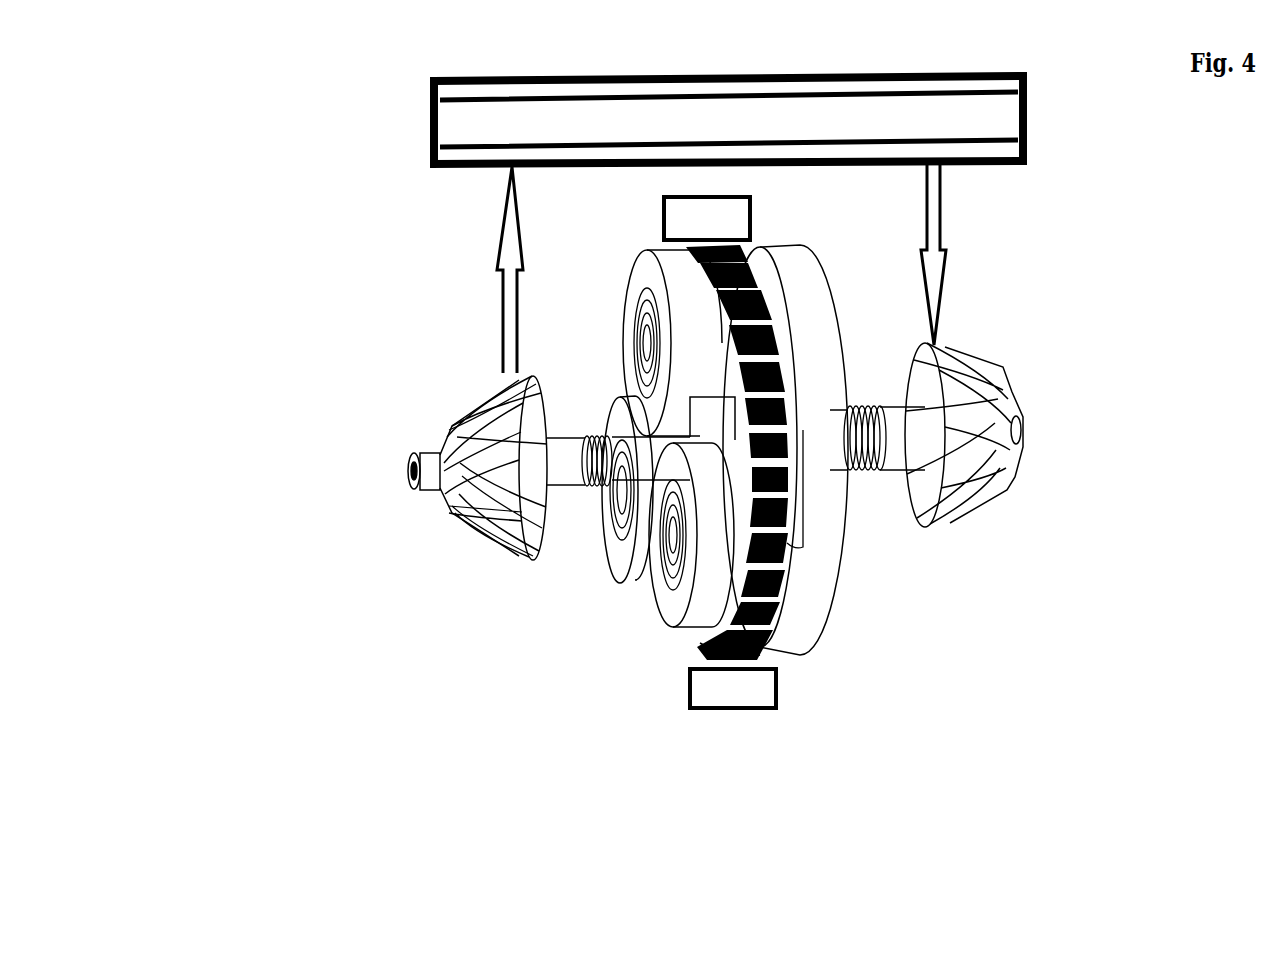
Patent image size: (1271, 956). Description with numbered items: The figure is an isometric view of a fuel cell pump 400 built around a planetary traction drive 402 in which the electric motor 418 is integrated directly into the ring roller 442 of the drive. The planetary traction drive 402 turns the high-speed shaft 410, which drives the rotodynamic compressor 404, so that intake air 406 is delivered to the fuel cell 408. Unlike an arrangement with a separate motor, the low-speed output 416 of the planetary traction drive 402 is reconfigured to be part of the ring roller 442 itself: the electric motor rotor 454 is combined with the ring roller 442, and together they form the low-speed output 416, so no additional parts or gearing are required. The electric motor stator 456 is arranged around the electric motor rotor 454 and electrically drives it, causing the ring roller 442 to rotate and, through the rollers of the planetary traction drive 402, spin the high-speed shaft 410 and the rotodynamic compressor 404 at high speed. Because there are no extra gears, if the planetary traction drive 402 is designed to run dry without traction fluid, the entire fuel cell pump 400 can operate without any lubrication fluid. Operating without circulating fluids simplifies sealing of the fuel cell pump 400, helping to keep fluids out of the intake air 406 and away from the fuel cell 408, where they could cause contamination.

The fuel cell pump 400 is at (336, 137).
The planetary traction drive 402 is at (581, 556).
The rotodynamic compressor 404 is at (475, 405).
The intake air 406 is at (500, 256).
The fuel cell 408 is at (622, 107).
The high-speed shaft 410 is at (620, 445).
The low-speed output 416 is at (697, 645).
The electric motor 418 is at (843, 524).
The ring roller 442 is at (800, 553).
The electric motor rotor 454 is at (783, 602).
The electric motor stator 456 is at (698, 693).